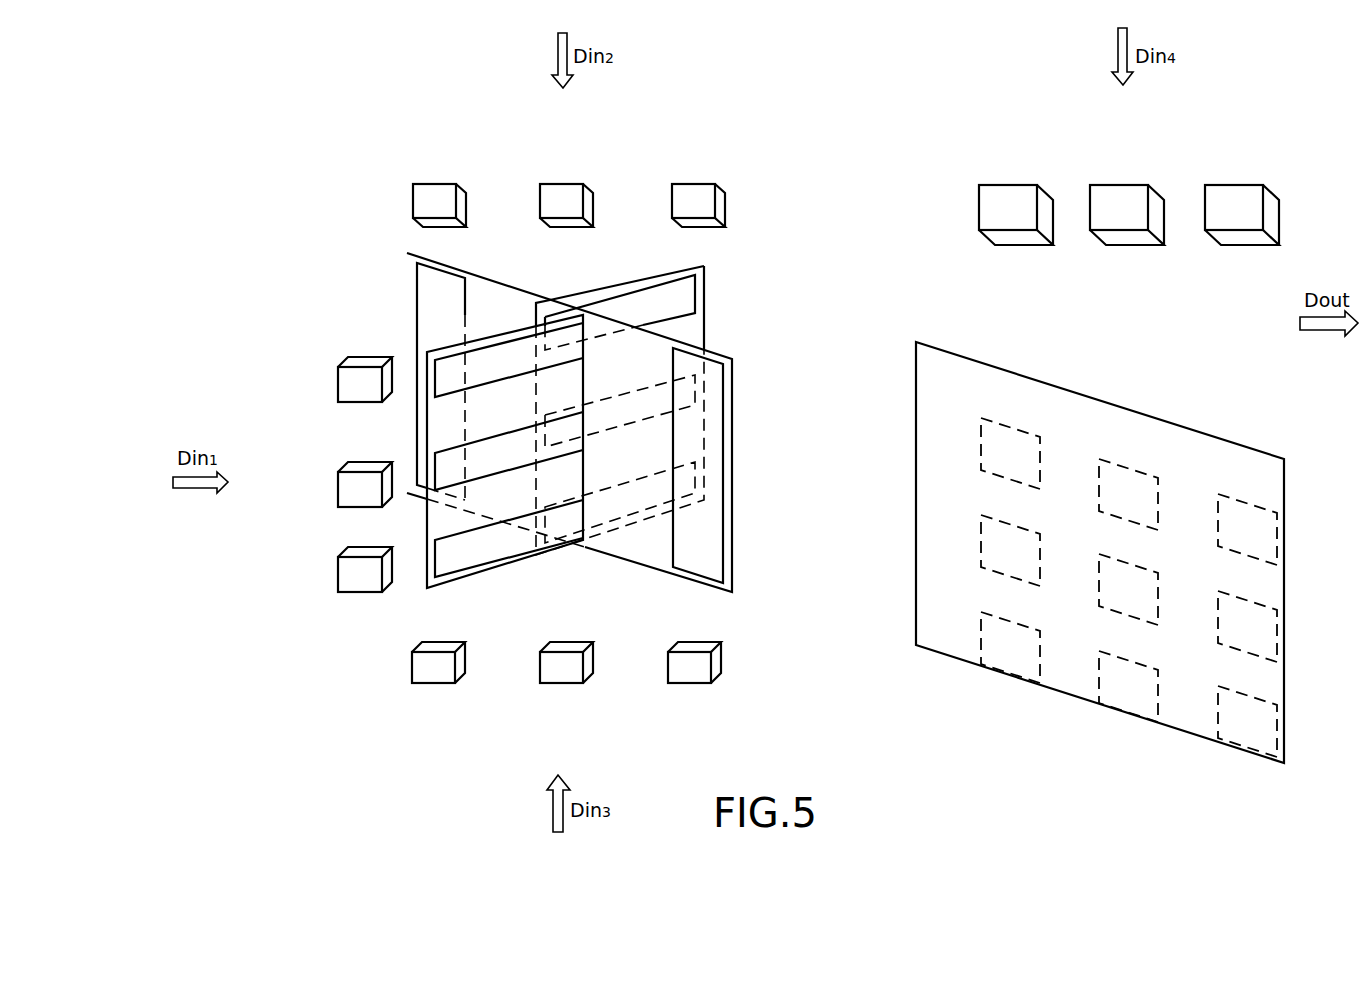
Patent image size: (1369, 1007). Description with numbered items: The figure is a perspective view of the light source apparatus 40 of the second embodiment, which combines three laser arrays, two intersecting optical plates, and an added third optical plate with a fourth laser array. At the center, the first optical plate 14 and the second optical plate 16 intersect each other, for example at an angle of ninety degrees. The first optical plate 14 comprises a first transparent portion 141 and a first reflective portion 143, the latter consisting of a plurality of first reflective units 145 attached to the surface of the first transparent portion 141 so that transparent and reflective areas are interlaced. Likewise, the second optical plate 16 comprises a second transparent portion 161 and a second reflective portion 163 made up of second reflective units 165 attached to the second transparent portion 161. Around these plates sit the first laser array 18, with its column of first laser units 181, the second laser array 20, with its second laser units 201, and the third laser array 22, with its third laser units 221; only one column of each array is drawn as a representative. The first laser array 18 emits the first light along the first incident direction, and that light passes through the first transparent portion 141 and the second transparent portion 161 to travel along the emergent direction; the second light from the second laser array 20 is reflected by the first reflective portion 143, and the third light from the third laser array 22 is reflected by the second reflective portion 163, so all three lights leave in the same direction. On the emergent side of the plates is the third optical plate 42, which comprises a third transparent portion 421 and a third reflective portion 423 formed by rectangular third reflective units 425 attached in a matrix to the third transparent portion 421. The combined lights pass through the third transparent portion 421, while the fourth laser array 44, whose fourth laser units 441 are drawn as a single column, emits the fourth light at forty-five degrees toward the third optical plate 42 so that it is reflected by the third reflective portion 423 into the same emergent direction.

The first optical plate 14 is at (412, 280).
The first transparent portion 141 is at (602, 538).
The first reflective portion 143 is at (347, 602).
The first reflective units 145 is at (423, 485).
The second optical plate 16 is at (707, 273).
The second transparent portion 161 is at (645, 292).
The second reflective portion 163 is at (786, 293).
The second reflective units 165 is at (667, 301).
The first laser array 18 is at (272, 378).
The first laser units 181 is at (348, 383).
The second laser array 20 is at (705, 140).
The second laser units 201 is at (437, 199).
The third laser array 22 is at (700, 723).
The third laser units 221 is at (433, 669).
The light source apparatus 40 is at (1290, 118).
The third optical plate 42 is at (1269, 453).
The third transparent portion 421 is at (943, 373).
The third reflective portion 423 is at (1273, 337).
The third reflective units 425 is at (1011, 447).
The fourth laser array 44 is at (1247, 143).
The fourth laser units 441 is at (1009, 203).